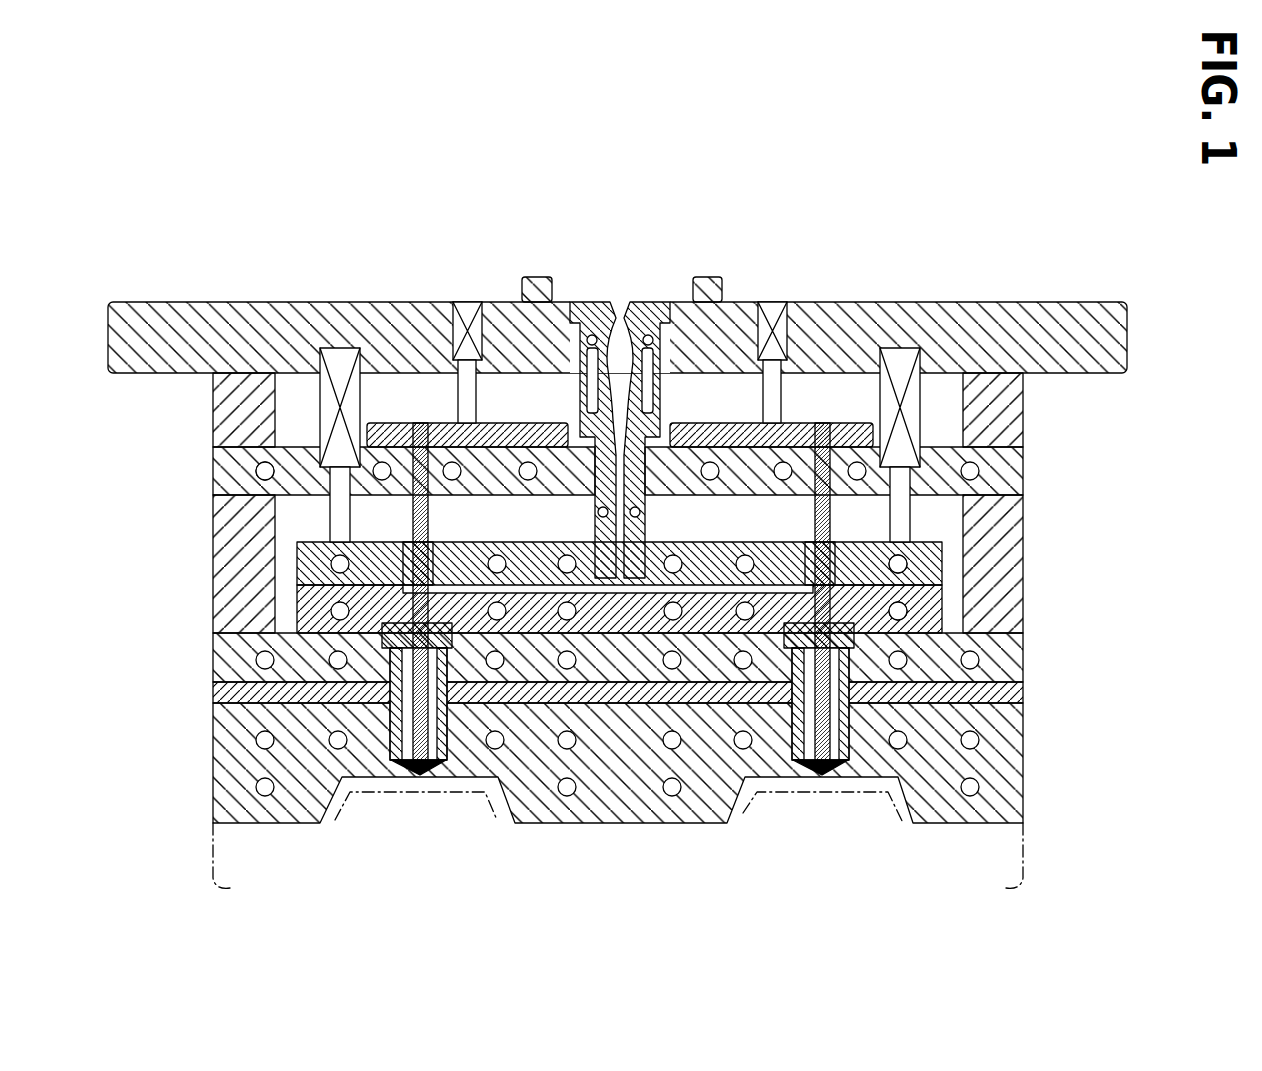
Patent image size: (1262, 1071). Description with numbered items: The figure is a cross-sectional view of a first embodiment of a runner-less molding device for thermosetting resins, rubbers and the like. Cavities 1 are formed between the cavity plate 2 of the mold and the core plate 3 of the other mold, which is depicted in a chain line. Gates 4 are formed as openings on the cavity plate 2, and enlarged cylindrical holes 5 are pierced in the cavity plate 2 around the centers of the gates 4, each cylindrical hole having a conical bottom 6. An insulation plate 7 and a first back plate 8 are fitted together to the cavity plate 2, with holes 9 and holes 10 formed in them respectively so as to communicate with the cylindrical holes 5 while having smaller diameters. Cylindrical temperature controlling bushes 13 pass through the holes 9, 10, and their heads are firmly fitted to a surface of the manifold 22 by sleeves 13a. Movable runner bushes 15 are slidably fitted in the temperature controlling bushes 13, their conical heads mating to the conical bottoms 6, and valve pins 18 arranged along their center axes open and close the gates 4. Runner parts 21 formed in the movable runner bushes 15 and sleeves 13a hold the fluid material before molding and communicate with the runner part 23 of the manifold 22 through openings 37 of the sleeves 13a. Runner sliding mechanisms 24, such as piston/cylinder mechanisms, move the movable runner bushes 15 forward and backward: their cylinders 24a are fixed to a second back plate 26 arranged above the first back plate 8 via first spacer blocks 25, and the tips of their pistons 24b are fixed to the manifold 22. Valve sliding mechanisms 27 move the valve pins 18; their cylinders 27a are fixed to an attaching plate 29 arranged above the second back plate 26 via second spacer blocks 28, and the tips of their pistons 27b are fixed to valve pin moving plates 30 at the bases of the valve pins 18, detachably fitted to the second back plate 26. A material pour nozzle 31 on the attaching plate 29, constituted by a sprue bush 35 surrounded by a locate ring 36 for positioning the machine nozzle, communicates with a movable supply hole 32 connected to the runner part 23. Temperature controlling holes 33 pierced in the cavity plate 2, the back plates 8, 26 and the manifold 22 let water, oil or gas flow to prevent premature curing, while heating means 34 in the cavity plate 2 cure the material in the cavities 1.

The cavities 1 is at (452, 780).
The cavity plate 2 is at (225, 773).
The core plate 3 is at (213, 870).
The gates 4 is at (822, 775).
The enlarged cylindrical holes 5 is at (795, 700).
The conical bottoms 6 is at (812, 772).
The insulation plate 7 is at (218, 695).
The first back plate 8 is at (228, 655).
The holes 9 is at (680, 800).
The holes 10 is at (390, 662).
The cylindrical temperature controlling bushes 13 is at (910, 688).
The sleeves 13a is at (403, 538).
The movable runner bushes 15 is at (825, 735).
The valve pins 18 is at (963, 500).
The runner parts 21 is at (423, 775).
The manifold 22 is at (658, 540).
The runner part 23 is at (655, 592).
The runner sliding mechanisms 24 is at (333, 352).
The cylinders 24a is at (323, 413).
The pistons 24b is at (343, 527).
The first spacer blocks 25 is at (1012, 545).
The second back plate 26 is at (1013, 480).
The valve sliding mechanisms 27 is at (464, 300).
The cylinders 27a is at (457, 348).
The pistons 27b is at (476, 405).
The second spacer blocks 28 is at (1015, 433).
The attaching plate 29 is at (956, 302).
The valve pin moving plates 30 is at (850, 420).
The material pour nozzle 31 is at (618, 312).
The movable supply hole 32 is at (545, 395).
The temperature controlling holes 33 is at (262, 470).
The heating means 34 is at (970, 787).
The sprue bush 35 is at (582, 302).
The locate ring 36 is at (530, 288).
The openings 37 is at (547, 640).